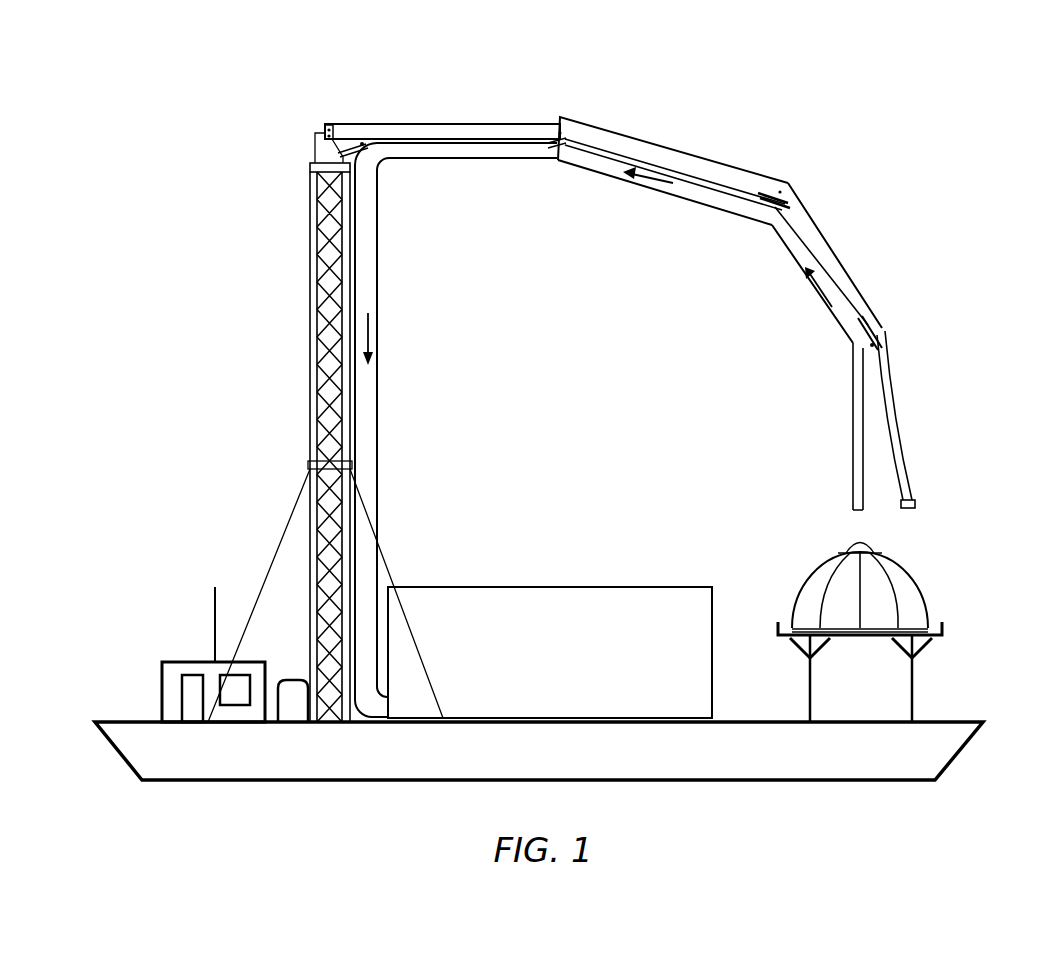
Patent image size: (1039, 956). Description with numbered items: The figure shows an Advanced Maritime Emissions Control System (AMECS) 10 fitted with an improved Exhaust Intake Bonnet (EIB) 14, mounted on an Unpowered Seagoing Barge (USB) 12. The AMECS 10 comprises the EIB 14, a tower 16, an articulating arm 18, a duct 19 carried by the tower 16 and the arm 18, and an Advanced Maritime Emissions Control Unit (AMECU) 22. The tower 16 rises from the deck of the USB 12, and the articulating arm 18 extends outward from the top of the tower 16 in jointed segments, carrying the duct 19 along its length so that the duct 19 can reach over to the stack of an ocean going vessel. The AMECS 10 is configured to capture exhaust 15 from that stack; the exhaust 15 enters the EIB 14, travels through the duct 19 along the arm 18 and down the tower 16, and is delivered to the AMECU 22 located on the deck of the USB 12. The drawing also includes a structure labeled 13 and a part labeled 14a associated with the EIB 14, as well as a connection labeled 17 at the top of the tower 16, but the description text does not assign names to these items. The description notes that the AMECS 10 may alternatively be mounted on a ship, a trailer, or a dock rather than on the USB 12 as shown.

The Advanced Maritime Emissions Control System (AMECS) 10 is at (899, 154).
The Unpowered Seagoing Barge (USB) 12 is at (148, 753).
The cabin 13 is at (170, 672).
The Exhaust Intake Bonnet (EIB) 14 is at (907, 597).
The support legs 14a is at (907, 690).
The exhaust 15 is at (370, 330).
The tower 16 is at (318, 370).
The pivot hinge 17 is at (328, 128).
The articulating arm 18 is at (627, 143).
The duct 19 is at (530, 150).
The Advanced Maritime Emissions Control Unit (AMECU) 22 is at (550, 652).